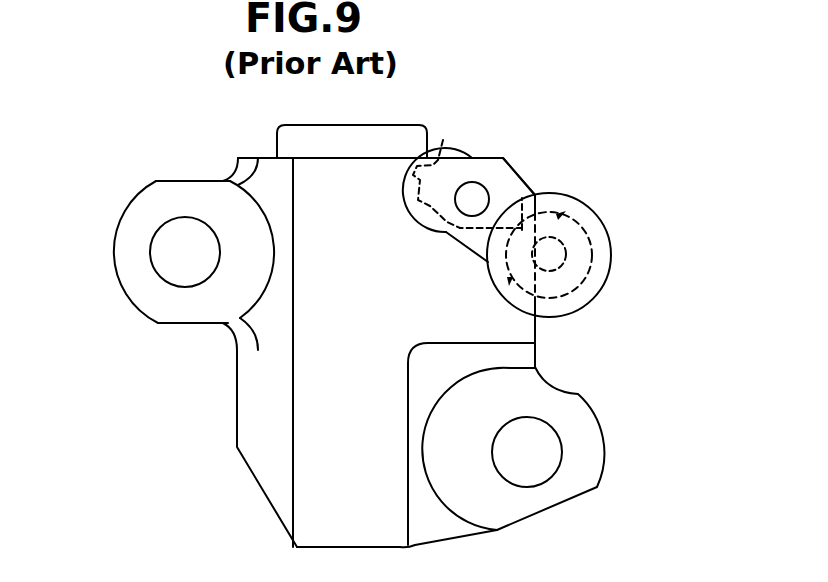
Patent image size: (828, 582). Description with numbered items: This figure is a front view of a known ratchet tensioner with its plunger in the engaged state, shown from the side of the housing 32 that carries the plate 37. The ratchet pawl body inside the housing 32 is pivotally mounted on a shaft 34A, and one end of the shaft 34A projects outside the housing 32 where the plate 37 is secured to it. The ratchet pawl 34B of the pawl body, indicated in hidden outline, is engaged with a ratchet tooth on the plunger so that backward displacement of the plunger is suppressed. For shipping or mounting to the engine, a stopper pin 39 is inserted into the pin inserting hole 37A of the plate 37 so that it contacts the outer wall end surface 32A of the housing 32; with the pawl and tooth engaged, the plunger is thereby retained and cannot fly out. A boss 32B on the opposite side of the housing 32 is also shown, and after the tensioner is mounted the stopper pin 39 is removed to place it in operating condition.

The housing 32 is at (323, 408).
The outer wall end surface 32A is at (540, 272).
The left mounting boss 32B is at (173, 242).
The shaft 34A is at (478, 193).
The ratchet pawl 34B is at (443, 140).
The plate 37 is at (480, 162).
The pin inserting hole 37A is at (558, 257).
The stopper pin 39 is at (590, 215).